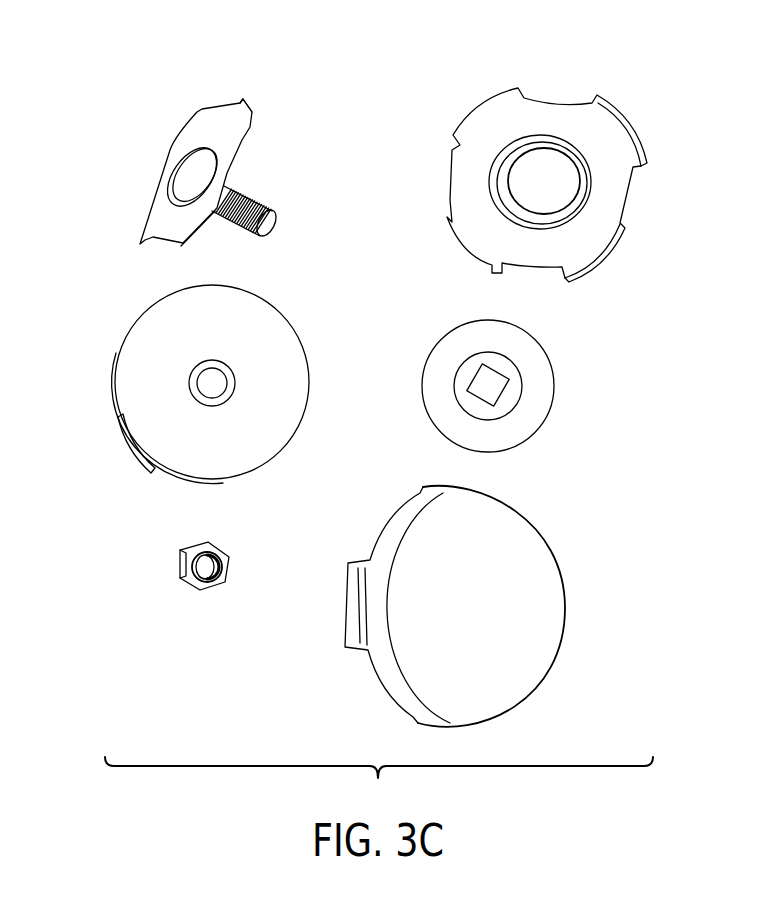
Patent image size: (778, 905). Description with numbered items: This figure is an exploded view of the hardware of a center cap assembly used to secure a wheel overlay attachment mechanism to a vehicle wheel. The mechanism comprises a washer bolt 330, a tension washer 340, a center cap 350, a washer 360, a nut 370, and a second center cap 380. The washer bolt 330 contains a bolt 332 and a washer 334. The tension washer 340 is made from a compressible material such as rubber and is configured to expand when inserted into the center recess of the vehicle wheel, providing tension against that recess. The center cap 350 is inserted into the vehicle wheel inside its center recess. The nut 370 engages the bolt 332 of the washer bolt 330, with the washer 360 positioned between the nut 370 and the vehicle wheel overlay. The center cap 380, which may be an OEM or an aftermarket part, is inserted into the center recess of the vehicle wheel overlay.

The washer bolt 330 is at (152, 144).
The bolt 332 is at (252, 197).
The washer 334 is at (243, 120).
The tension washer 340 is at (560, 87).
The center cap 350 is at (124, 321).
The washer 360 is at (563, 356).
The nut 370 is at (176, 546).
The center cap 380 is at (567, 530).